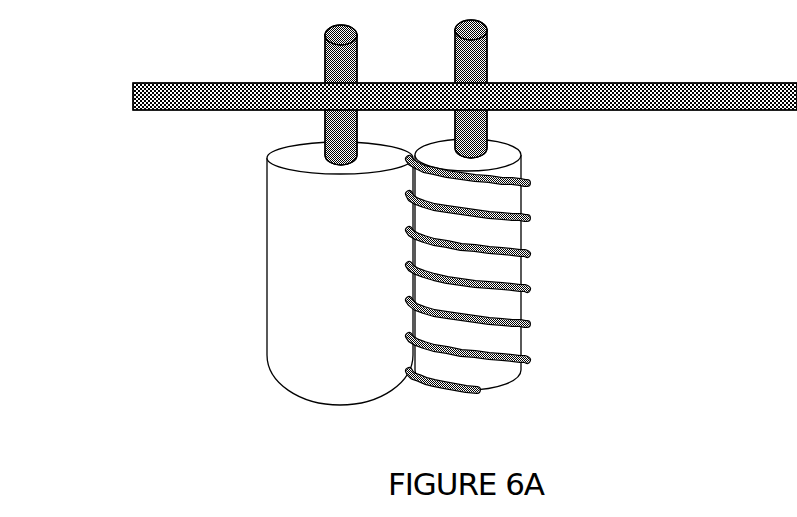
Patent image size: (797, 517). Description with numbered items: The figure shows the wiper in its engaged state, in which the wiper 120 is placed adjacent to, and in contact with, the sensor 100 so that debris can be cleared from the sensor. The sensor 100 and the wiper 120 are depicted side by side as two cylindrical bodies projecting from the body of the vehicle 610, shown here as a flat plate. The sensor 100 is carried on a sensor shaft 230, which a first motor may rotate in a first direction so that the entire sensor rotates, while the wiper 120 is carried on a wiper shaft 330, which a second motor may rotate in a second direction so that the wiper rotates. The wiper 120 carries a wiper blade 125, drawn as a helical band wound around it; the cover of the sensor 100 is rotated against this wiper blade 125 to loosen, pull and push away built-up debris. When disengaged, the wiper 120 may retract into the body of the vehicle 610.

The sensor 100 is at (363, 441).
The wiper 120 is at (488, 439).
The wiper blade 125 is at (530, 183).
The sensor shaft 230 is at (327, 38).
The wiper shaft 330 is at (455, 32).
The body of the vehicle 610 is at (172, 83).